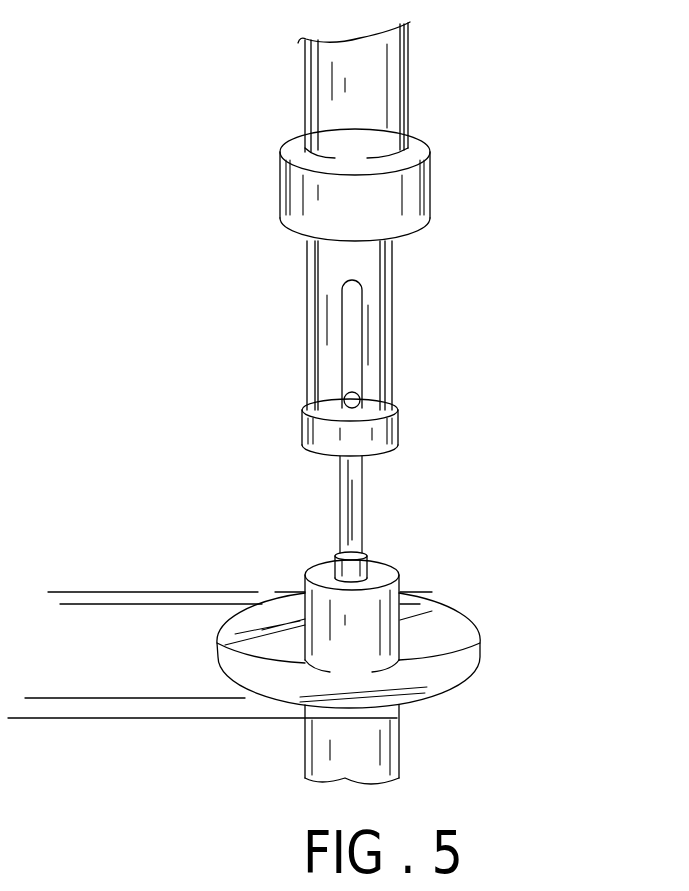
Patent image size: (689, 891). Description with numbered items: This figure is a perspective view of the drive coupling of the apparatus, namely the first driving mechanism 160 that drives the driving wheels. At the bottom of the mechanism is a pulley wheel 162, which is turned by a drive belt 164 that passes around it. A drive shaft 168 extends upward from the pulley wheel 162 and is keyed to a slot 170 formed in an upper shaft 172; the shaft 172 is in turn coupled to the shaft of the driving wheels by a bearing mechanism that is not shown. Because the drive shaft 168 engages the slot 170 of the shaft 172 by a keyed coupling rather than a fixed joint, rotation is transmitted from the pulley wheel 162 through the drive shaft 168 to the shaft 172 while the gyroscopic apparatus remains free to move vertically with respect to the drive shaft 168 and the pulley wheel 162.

The first driving mechanism 160 is at (490, 458).
The pulley wheel 162 is at (465, 647).
The drive belt 164 is at (187, 710).
The drive shaft 168 is at (352, 503).
The slot 170 is at (353, 368).
The shaft 172 is at (373, 355).